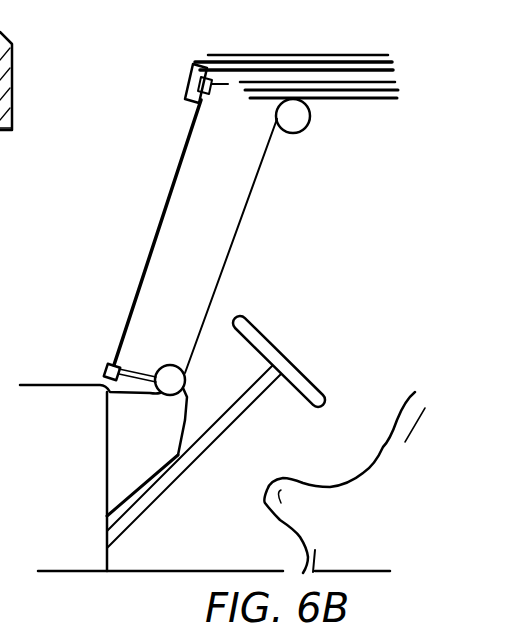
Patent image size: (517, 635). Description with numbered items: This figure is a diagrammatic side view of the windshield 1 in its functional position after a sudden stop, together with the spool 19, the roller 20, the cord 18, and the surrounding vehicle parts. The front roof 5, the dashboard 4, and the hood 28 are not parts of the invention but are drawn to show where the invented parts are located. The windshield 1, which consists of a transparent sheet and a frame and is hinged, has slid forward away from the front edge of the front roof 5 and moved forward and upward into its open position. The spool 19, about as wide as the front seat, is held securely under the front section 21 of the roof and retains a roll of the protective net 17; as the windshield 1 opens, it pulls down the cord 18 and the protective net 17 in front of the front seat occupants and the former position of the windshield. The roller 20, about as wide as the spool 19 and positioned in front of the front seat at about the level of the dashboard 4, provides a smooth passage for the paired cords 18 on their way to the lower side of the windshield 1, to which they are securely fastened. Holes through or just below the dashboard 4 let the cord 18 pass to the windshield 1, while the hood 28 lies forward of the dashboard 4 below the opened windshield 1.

The windshield 1 is at (154, 207).
The dashboard 4 is at (118, 477).
The front roof 5 is at (350, 55).
The protective net 17 is at (242, 238).
The cord 18 is at (135, 376).
The spool 19 is at (306, 133).
The roller 20 is at (191, 373).
The front section of the roof 21 is at (208, 56).
The hood 28 is at (47, 392).